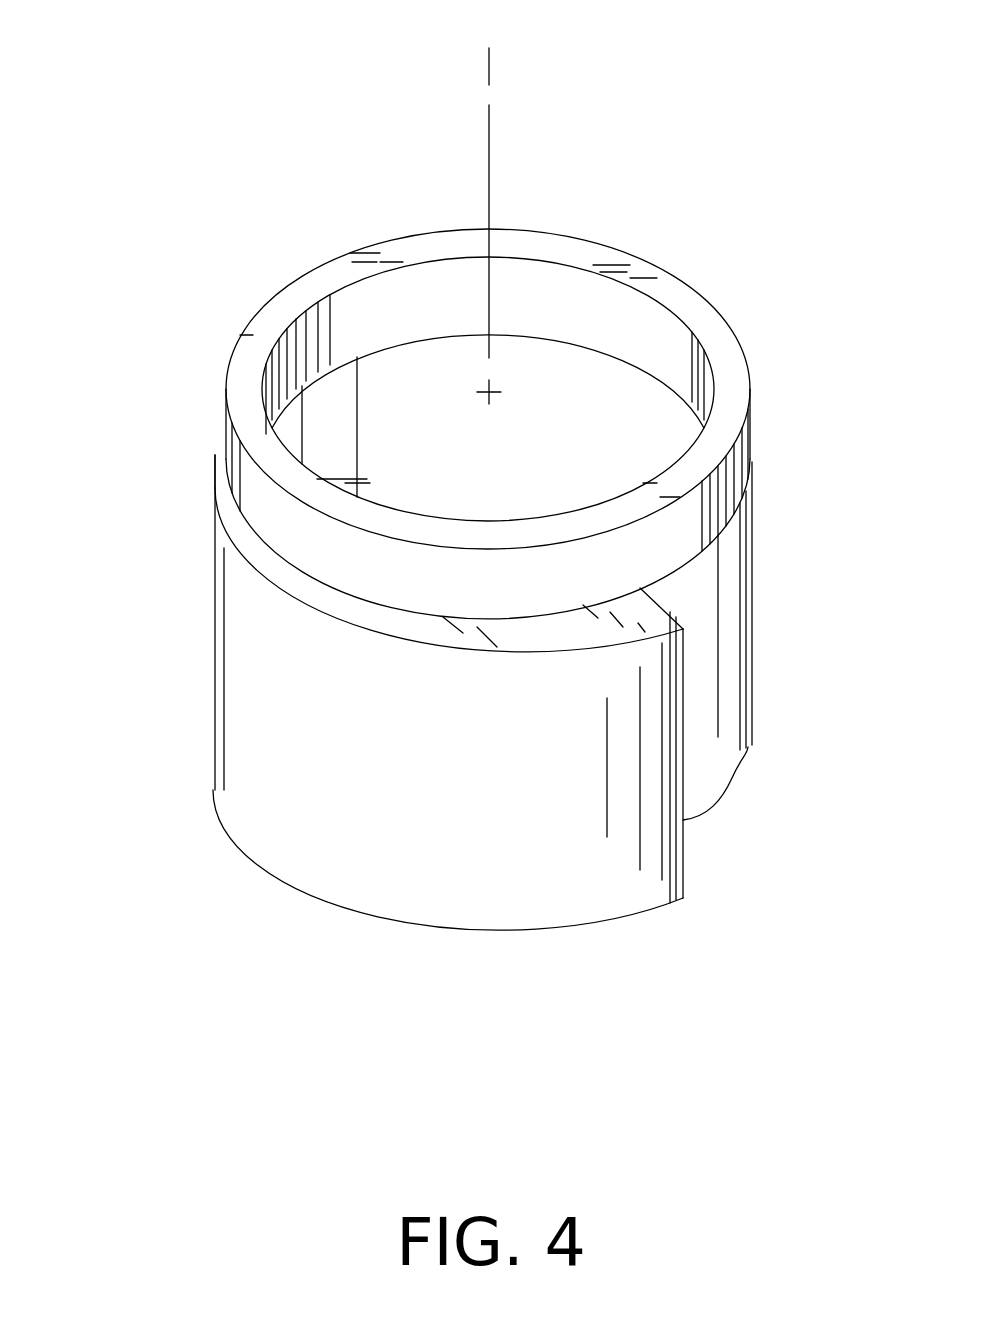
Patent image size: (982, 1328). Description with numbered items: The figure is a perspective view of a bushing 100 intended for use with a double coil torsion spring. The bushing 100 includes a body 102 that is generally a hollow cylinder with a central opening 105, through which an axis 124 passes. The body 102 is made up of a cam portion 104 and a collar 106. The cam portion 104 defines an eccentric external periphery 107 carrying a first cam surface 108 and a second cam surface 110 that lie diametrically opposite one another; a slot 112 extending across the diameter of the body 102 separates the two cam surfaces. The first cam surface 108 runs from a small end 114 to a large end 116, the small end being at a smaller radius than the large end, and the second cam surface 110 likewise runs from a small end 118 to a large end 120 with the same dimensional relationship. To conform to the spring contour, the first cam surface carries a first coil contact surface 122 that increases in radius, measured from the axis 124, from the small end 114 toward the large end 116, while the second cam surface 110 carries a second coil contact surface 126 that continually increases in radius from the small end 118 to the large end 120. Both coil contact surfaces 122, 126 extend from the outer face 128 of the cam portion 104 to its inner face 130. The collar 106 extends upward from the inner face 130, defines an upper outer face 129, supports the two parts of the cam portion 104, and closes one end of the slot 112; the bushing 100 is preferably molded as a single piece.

The bushing 100 is at (312, 108).
The body 102 is at (757, 213).
The cam portion 104 is at (187, 655).
The central opening 105 is at (627, 188).
The collar 106 is at (235, 412).
The eccentric external periphery 107 is at (740, 798).
The first cam surface 108 is at (778, 515).
The second cam surface 110 is at (457, 942).
The slot 112 is at (708, 848).
The small end 114 is at (720, 737).
The large end 116 is at (328, 405).
The small end 118 is at (226, 458).
The large end 120 is at (688, 903).
The first coil contact surface 122 is at (728, 622).
The axis 124 is at (489, 158).
The second coil contact surface 126 is at (398, 812).
The outer face 128 is at (522, 930).
The upper outer face 129 is at (722, 347).
The inner face 130 is at (265, 557).